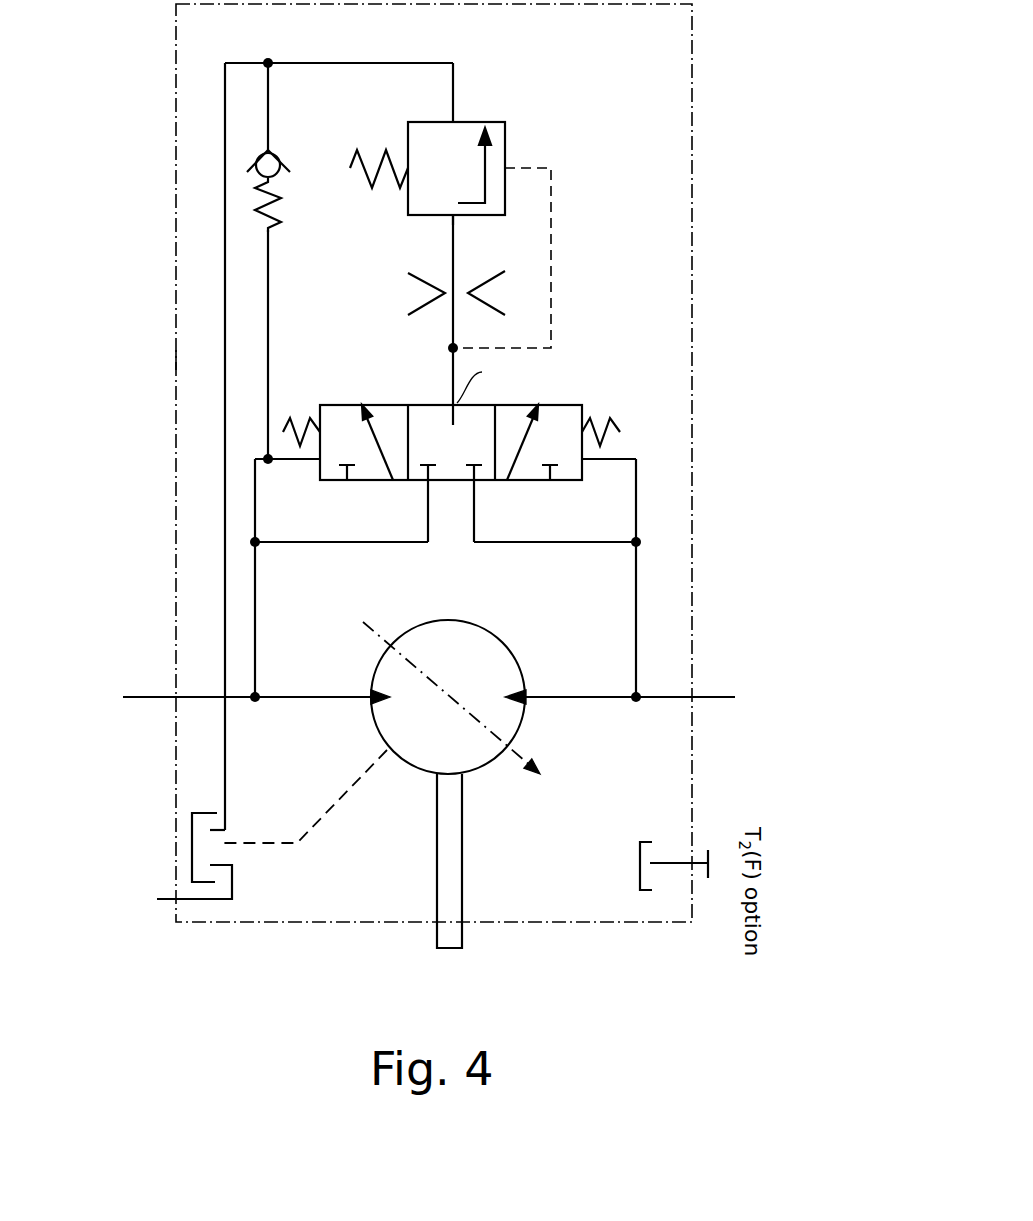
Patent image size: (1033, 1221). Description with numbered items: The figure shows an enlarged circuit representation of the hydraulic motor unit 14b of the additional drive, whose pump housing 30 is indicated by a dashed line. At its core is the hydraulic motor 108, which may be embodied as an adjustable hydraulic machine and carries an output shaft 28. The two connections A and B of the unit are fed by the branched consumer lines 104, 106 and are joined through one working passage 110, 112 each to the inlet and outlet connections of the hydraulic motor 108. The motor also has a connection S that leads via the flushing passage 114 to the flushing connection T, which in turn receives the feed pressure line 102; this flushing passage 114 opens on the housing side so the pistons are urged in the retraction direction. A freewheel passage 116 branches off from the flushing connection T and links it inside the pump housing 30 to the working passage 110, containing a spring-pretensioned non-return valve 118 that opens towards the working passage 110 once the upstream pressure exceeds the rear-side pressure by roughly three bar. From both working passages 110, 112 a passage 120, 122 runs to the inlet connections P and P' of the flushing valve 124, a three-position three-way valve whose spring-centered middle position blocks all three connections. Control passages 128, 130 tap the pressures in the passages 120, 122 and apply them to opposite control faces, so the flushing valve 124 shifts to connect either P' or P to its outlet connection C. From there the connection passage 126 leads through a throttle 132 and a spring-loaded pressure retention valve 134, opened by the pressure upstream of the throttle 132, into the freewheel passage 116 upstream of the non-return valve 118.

The pump housing 30 is at (692, 280).
The hydraulic motor unit 14b is at (707, 355).
The freewheel passage 116 is at (225, 240).
The connection passage 126 is at (268, 86).
The pressure retention valve 134 is at (500, 143).
The spring-pretensioned non-return valve 118 is at (450, 253).
The throttle 132 is at (490, 296).
The flushing valve 124 is at (320, 418).
The control passage 128 is at (255, 490).
The passage 120 is at (255, 592).
The control passage 130 is at (637, 508).
The passage 122 is at (636, 636).
The consumer line 104 is at (153, 692).
The consumer line 106 is at (712, 697).
The working passage 110 is at (317, 697).
The working passage 112 is at (607, 697).
The hydraulic motor 108 is at (507, 668).
The output shaft 28 is at (450, 937).
The flushing passage 114 is at (343, 797).
The feed pressure line 102 is at (170, 898).